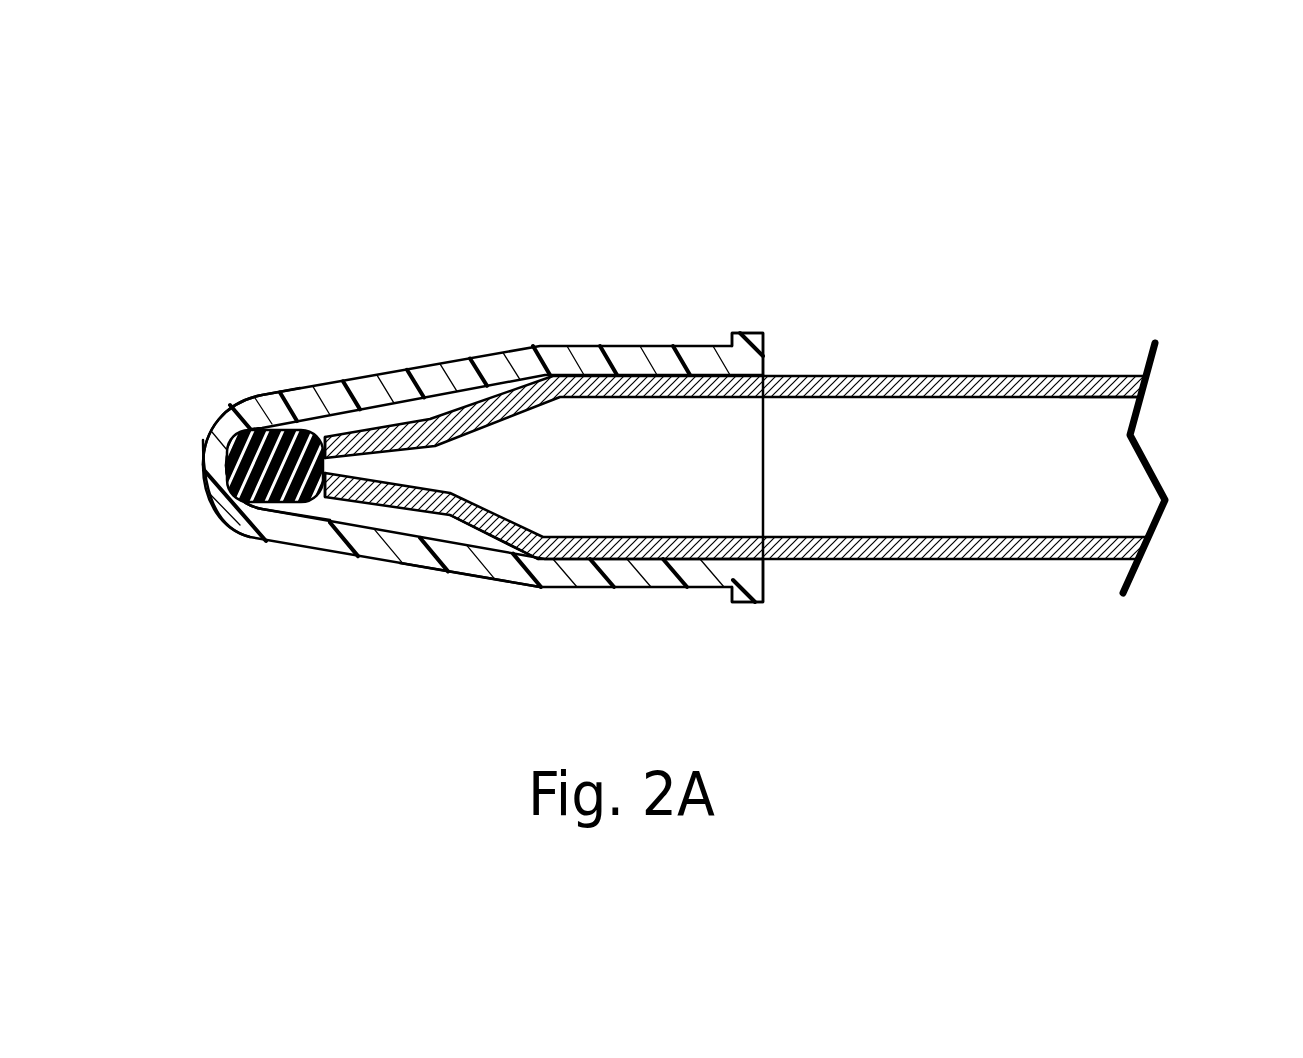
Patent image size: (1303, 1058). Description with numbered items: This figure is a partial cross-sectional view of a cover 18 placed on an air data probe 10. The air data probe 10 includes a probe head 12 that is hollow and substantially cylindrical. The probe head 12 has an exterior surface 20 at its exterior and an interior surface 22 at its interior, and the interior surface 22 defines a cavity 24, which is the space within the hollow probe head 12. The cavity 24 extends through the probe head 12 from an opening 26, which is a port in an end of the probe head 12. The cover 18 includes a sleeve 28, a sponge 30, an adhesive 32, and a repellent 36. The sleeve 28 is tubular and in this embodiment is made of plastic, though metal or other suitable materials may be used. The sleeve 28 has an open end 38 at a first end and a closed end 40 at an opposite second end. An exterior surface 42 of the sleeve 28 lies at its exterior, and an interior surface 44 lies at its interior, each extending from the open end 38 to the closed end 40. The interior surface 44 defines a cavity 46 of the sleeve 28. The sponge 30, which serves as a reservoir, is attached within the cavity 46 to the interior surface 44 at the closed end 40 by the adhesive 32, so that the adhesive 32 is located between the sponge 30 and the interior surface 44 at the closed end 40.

The air data probe 10 is at (964, 160).
The probe head 12 is at (1049, 341).
The cover 18 is at (371, 303).
The exterior surface 20 is at (1088, 377).
The interior surface 22 is at (1100, 398).
The cavity 24 is at (1108, 497).
The opening 26 is at (337, 447).
The sleeve 28 is at (592, 577).
The sponge 30 is at (235, 408).
The adhesive 32 is at (228, 498).
The repellent 36 is at (273, 470).
The open end 38 is at (765, 580).
The closed end 40 is at (200, 461).
The exterior surface 42 is at (466, 573).
The interior surface 44 is at (376, 530).
The cavity 46 is at (453, 532).